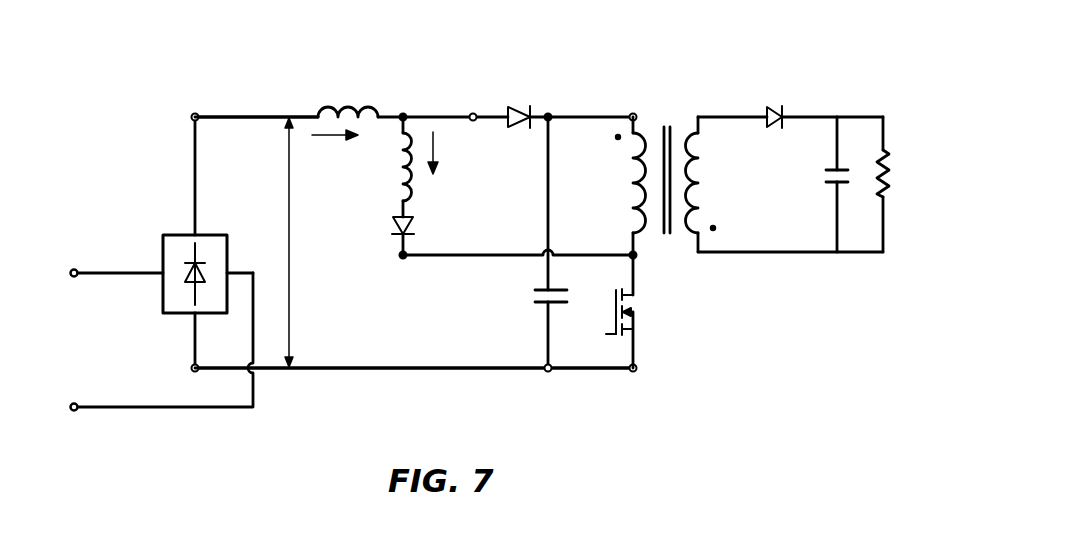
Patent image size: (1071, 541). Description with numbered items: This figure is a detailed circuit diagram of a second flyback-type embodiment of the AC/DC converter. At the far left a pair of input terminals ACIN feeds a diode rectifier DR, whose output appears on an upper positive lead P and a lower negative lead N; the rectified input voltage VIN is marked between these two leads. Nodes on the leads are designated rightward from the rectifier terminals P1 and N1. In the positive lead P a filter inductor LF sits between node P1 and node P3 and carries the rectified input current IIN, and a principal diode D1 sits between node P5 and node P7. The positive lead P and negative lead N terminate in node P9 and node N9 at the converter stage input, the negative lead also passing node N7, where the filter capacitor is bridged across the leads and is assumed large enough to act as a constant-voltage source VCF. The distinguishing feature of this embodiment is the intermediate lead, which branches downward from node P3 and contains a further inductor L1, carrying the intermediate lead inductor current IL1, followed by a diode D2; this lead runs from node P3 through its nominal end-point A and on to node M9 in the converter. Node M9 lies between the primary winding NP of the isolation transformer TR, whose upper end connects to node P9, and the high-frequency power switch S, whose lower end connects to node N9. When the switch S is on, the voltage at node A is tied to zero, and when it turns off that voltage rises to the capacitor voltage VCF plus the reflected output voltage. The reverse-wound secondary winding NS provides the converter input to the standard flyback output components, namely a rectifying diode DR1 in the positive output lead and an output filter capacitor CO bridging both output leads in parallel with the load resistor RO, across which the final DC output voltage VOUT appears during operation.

The node P1 is at (192, 115).
The positive lead P is at (254, 116).
The node P3 is at (403, 112).
The node P5 is at (473, 113).
The node P7 is at (548, 113).
The node P9 is at (633, 113).
The node N1 is at (193, 370).
The negative lead N is at (375, 371).
The node N7 is at (548, 372).
The node N9 is at (640, 370).
The node M9 is at (638, 258).
The node A is at (403, 260).
The diode rectifier DR is at (190, 261).
The input terminals ACIN is at (142, 340).
The input voltage VIN is at (282, 242).
The rectified input current IIN is at (335, 150).
The filter inductor LF is at (348, 98).
The further inductor L1 is at (393, 167).
The intermediate lead inductor current IL1 is at (446, 153).
The principal diode D1 is at (520, 103).
The diode D2 is at (396, 226).
The filter capacitor voltage VCF is at (523, 297).
The high-frequency power switch S is at (631, 311).
The isolation transformer TR is at (663, 163).
The primary winding NP is at (622, 186).
The secondary winding NS is at (706, 184).
The rectifying diode DR1 is at (777, 104).
The output filter capacitor CO is at (828, 186).
The load resistor RO is at (883, 188).
The DC output voltage VOUT is at (914, 171).